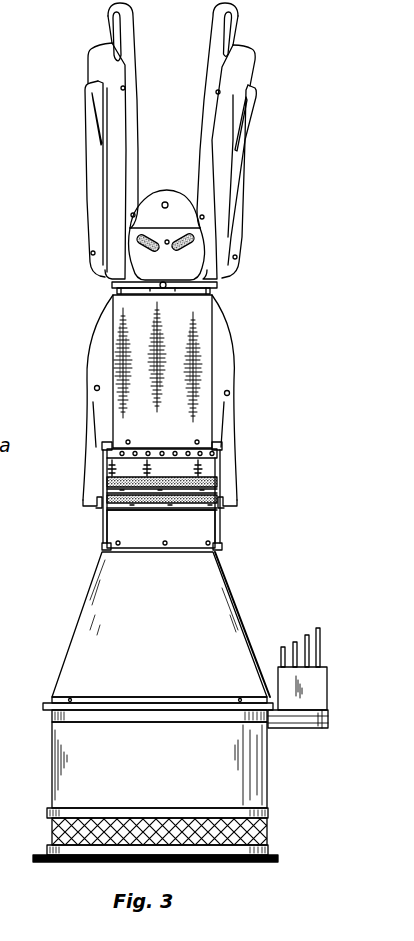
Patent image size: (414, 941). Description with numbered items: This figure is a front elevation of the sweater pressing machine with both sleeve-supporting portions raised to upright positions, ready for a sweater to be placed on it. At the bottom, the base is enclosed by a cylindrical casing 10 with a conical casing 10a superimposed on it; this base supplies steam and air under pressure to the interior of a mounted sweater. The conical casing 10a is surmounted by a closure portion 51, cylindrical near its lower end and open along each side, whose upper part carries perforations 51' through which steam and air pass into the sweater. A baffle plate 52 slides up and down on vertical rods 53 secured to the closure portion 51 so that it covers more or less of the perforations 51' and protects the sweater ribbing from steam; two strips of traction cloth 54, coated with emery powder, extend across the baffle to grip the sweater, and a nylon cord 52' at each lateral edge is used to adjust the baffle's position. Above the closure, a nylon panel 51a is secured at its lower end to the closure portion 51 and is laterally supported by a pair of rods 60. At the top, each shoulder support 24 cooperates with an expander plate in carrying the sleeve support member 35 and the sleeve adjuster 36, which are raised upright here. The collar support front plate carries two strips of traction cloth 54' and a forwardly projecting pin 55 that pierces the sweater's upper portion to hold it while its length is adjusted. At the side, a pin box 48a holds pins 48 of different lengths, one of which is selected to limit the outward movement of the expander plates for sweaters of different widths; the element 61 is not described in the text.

The sleeve support member 35 is at (107, 24).
The sleeve adjuster 36 is at (88, 62).
The shoulder support 24 is at (90, 166).
The forwardly projecting pin 55 is at (168, 240).
The strips of traction cloth 54' is at (124, 241).
The rod 60 is at (115, 288).
The nylon panel 51a is at (207, 322).
The perforations 51' is at (136, 450).
The baffle plate 52 is at (186, 492).
The traction cloth 54 is at (192, 493).
The nylon cord 52' is at (166, 517).
The rod 53 is at (107, 528).
The closure portion 51 is at (181, 556).
The conical casing 10a is at (90, 593).
The pin 48 is at (315, 633).
The pin box 48a is at (328, 703).
The cylindrical casing 10 is at (53, 753).
The finger pad 61 is at (7, 38).